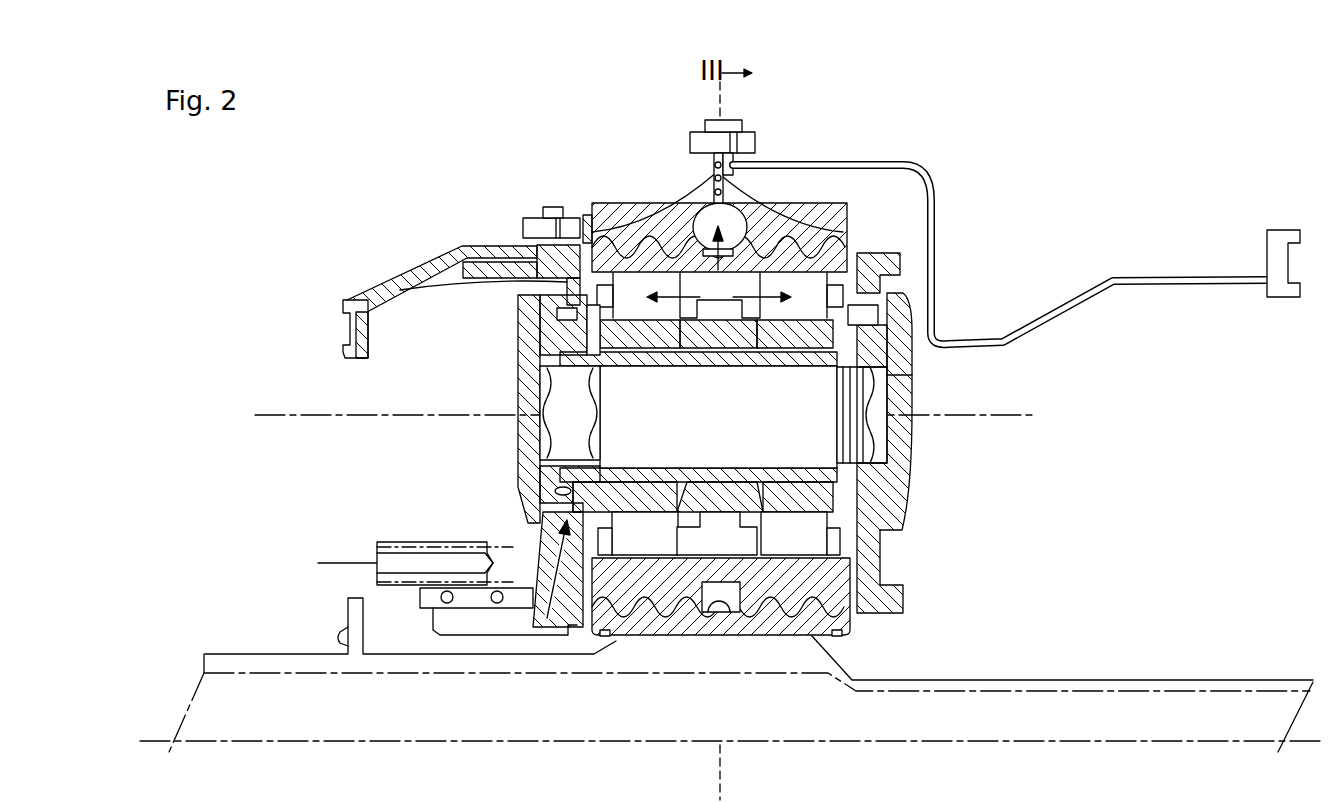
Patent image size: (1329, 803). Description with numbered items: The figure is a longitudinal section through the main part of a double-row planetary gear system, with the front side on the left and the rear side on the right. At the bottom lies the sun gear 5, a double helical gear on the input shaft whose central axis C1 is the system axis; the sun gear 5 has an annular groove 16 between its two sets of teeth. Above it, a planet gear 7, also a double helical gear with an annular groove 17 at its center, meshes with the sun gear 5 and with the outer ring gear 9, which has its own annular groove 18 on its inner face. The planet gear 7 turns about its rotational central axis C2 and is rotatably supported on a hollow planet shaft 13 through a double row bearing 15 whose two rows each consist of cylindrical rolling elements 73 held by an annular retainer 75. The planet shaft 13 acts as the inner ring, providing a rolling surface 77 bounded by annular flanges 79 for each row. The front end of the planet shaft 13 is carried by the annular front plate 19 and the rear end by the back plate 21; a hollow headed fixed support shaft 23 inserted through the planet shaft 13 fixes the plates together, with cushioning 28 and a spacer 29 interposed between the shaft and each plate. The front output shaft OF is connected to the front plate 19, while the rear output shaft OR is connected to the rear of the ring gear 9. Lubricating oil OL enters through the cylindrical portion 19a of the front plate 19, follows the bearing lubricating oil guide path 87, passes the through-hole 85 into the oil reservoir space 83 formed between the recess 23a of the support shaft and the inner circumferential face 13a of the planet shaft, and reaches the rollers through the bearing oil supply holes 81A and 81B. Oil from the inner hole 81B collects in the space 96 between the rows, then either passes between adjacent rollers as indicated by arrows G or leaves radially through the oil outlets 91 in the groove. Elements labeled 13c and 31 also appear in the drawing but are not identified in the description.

The sun gear 5 is at (847, 630).
The planet gear 7 is at (592, 240).
The ring gear 9 is at (592, 205).
The planet shaft 13 is at (887, 337).
The inner circumferential face of the planet shaft 13a is at (887, 376).
The hub portion 13c is at (530, 455).
The double row bearing 15 is at (603, 70).
The annular groove 16 is at (728, 610).
The annular groove 17 is at (845, 610).
The annular groove 18 is at (738, 213).
The front plate 19 is at (417, 270).
The cylindrical portion 19a is at (420, 600).
The back plate 21 is at (870, 253).
The fixed support shaft 23 is at (520, 390).
The recess 23a is at (793, 358).
The cushioning 28 is at (885, 270).
The spacer 29 is at (873, 317).
The bearing 31 is at (545, 443).
The rolling elements 73 is at (620, 280).
The annular retainer 75 is at (720, 282).
The rolling surface 77 is at (657, 348).
The annular flanges 79 is at (690, 320).
The bearing oil supply hole 81A is at (853, 313).
The bearing oil supply hole 81B is at (693, 325).
The oil reservoir space 83 is at (763, 350).
The through-hole 85 is at (530, 490).
The bearing lubricating oil guide path 87 is at (555, 553).
The oil outlets 91 is at (773, 293).
The space 96 is at (682, 282).
The arrows G is at (745, 238).
The lubricating oil OL is at (713, 253).
The rear output shaft OR is at (917, 162).
The front output shaft OF is at (415, 268).
The central axis C1 is at (160, 745).
The rotational central axis C2 is at (1018, 422).